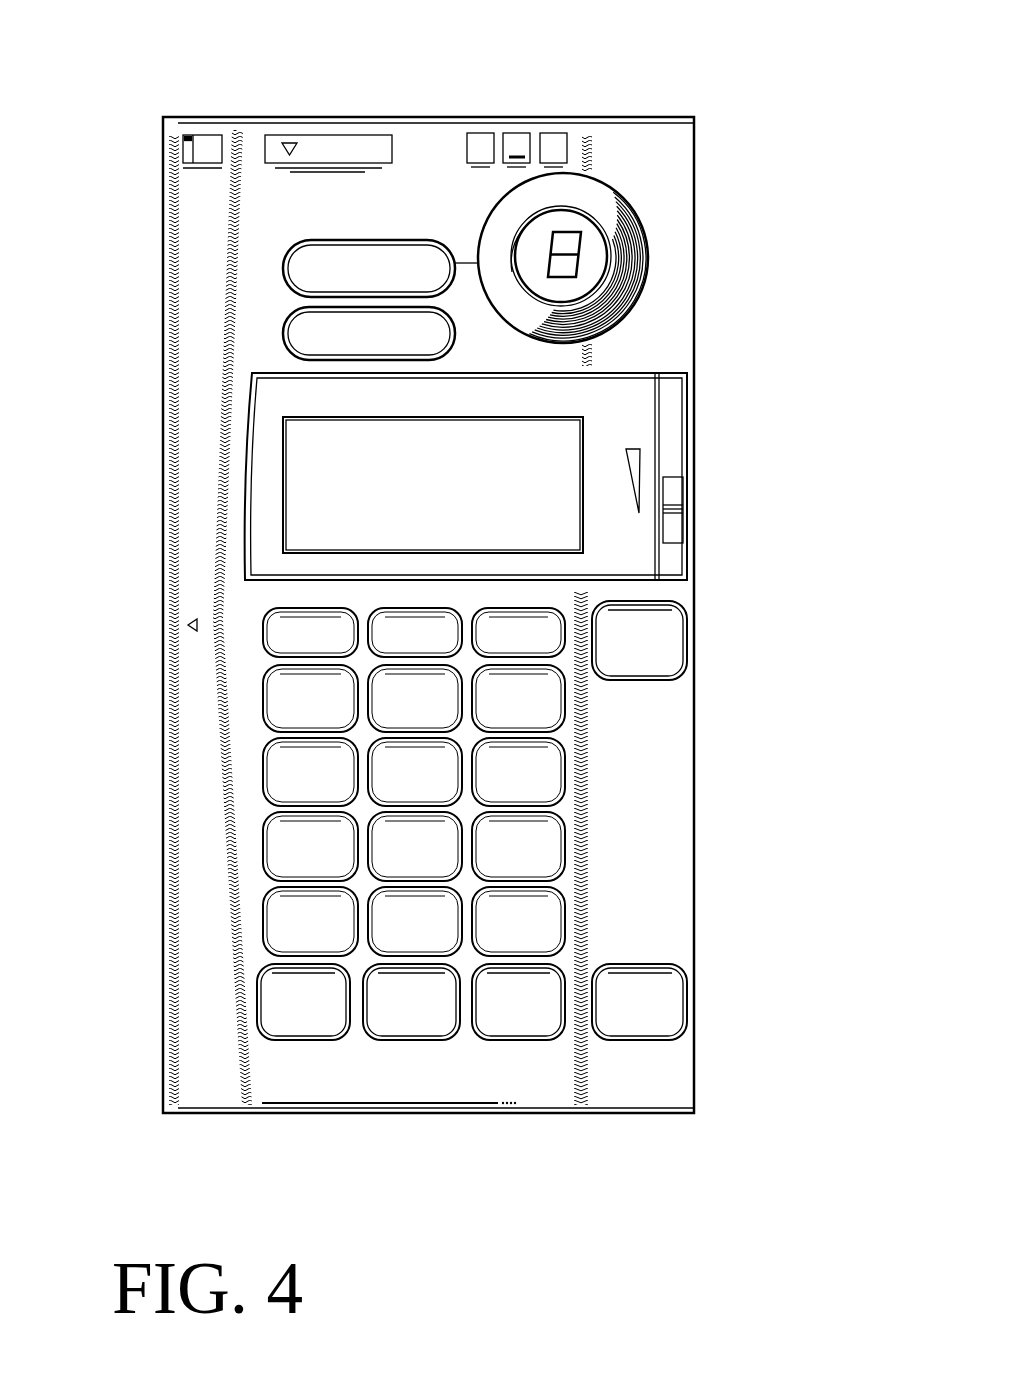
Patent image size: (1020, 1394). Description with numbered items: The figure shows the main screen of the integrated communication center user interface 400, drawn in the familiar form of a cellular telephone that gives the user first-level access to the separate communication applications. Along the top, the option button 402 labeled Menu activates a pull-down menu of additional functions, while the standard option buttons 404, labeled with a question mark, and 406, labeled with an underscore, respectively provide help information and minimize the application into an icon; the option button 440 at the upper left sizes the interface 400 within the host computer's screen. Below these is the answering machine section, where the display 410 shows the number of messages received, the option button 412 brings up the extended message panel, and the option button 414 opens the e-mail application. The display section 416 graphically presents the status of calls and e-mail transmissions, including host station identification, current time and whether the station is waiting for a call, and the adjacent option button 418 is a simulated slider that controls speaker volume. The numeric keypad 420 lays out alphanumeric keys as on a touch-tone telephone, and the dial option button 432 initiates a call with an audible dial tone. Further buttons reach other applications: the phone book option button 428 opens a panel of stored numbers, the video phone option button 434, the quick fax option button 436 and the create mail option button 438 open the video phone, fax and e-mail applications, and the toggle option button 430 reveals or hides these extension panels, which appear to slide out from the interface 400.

The integrated communication center user interface 400 is at (780, 149).
The option button labeled "Menu" 402 is at (297, 135).
The option button labeled "?" 404 is at (468, 133).
The option button labeled "_" 406 is at (508, 133).
The display 410 is at (640, 258).
The option button 412 is at (283, 267).
The option button 414 is at (283, 333).
The display section 416 is at (586, 417).
The option button 418 is at (683, 505).
The numeric keypad 420 is at (564, 808).
The phone book option button 428 is at (681, 637).
The option button 430 is at (188, 625).
The dial option button 432 is at (326, 1036).
The video phone option button 434 is at (433, 1036).
The quick fax option button 436 is at (549, 1036).
The create mail option button 438 is at (681, 1017).
The option button 440 is at (188, 149).